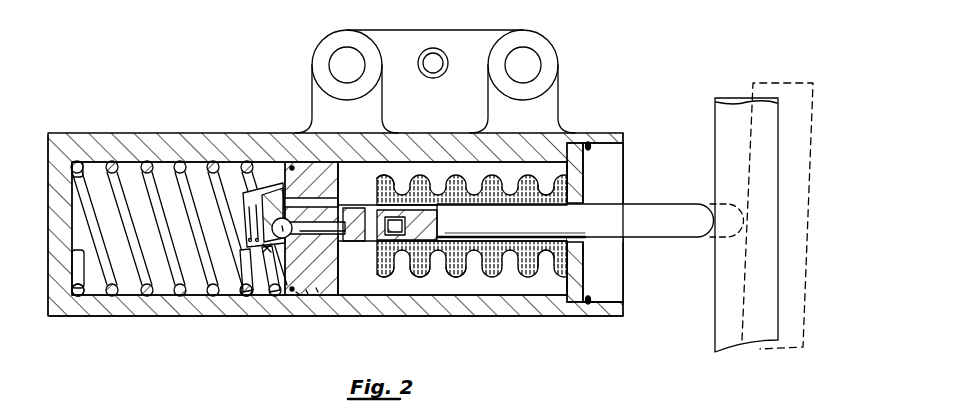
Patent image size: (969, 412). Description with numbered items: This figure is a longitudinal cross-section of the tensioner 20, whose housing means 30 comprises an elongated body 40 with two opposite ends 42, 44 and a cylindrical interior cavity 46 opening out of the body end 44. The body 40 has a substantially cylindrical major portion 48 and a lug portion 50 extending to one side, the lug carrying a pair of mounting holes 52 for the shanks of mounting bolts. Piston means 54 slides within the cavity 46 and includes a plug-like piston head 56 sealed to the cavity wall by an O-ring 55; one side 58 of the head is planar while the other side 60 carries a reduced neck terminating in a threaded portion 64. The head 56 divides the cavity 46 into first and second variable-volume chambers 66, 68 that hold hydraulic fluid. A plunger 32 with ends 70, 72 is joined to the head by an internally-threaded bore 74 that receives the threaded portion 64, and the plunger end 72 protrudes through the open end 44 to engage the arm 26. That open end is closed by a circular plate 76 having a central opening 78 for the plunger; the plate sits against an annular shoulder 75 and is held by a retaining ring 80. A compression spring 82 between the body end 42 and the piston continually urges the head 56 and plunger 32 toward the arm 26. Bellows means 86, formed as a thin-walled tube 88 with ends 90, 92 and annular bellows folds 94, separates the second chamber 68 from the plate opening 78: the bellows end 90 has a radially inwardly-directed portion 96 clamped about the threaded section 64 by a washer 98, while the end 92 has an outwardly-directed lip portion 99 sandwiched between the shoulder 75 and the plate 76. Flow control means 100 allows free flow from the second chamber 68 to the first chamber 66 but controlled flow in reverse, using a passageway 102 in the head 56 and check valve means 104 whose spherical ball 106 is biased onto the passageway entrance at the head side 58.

The tensioner 20 is at (226, 58).
The arm 26 is at (715, 128).
The housing means 30 is at (335, 225).
The plunger 32 is at (662, 228).
The elongated body 40 is at (202, 317).
The body end 42 is at (75, 318).
The body end 44 is at (623, 317).
The interior cavity 46 is at (92, 162).
The major portion 48 is at (297, 297).
The lug portion 50 is at (432, 66).
The mounting holes 52 is at (338, 58).
The piston means 54 is at (317, 290).
The O-ring 55 is at (307, 292).
The piston head 56 is at (290, 290).
The piston head side 58 is at (315, 236).
The piston head side 60 is at (358, 163).
The threaded portion 64 is at (437, 220).
The first variable-volume chamber 66 is at (128, 288).
The second variable-volume chamber 68 is at (472, 296).
The plunger end 70 is at (418, 278).
The plunger end 72 is at (590, 225).
The internally-threaded bore 74 is at (406, 222).
The annular shoulder 75 is at (572, 302).
The circular plate 76 is at (583, 160).
The central opening 78 is at (578, 233).
The retaining ring 80 is at (613, 229).
The spring 82 is at (179, 257).
The bellows means 86 is at (540, 276).
The thin-walled tube 88 is at (472, 155).
The bellows end 90 is at (384, 178).
The bellows end 92 is at (536, 185).
The annular bellows folds 94 is at (455, 278).
The radially inwardly-directed portion 96 is at (372, 187).
The washer 98 is at (383, 278).
The lip portion 99 is at (560, 132).
The flow control means 100 is at (297, 112).
The passageway 102 is at (452, 268).
The check valve means 104 is at (263, 275).
The spherical ball 106 is at (276, 220).